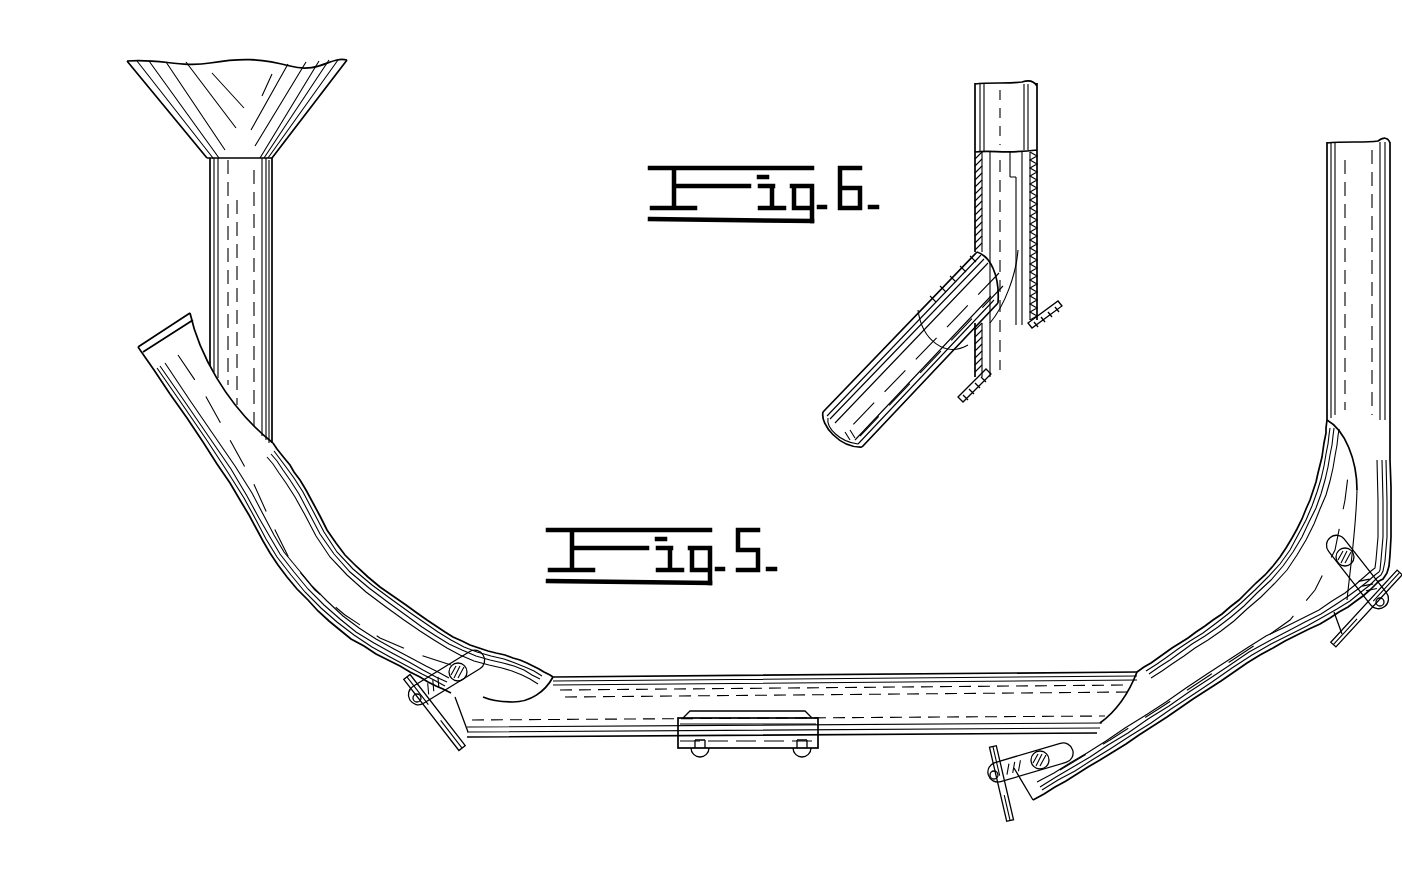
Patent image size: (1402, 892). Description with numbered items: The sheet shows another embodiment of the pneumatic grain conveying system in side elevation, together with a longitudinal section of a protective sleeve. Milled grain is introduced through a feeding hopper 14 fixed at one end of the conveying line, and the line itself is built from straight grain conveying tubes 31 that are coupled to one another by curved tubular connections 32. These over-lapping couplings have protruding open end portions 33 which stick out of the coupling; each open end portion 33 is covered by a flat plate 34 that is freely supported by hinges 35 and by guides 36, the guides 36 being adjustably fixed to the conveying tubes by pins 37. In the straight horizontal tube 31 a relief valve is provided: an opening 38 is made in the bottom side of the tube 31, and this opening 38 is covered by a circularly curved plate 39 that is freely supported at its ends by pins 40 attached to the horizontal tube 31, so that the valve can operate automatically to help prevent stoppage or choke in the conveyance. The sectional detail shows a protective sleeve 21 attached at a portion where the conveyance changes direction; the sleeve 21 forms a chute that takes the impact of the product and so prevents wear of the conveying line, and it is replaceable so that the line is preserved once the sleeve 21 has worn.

In FIG. 5, the feeding hopper 14 is at (277, 136).
In FIG. 6, the protective sleeve 21 is at (1040, 245).
In FIG. 5, the straight grain conveying tube 31 is at (263, 272).
In FIG. 5, the curved tubular connection 32 is at (305, 512).
In FIG. 5, the protruding open end portion 33 is at (470, 735).
In FIG. 5, the flat plate 34 is at (438, 722).
In FIG. 5, the hinge 35 is at (410, 698).
In FIG. 5, the guide 36 is at (489, 658).
In FIG. 5, the pin 37 is at (458, 663).
In FIG. 5, the opening 38 is at (720, 712).
In FIG. 5, the circularly curved plate 39 is at (765, 737).
In FIG. 5, the pin 40 is at (703, 755).